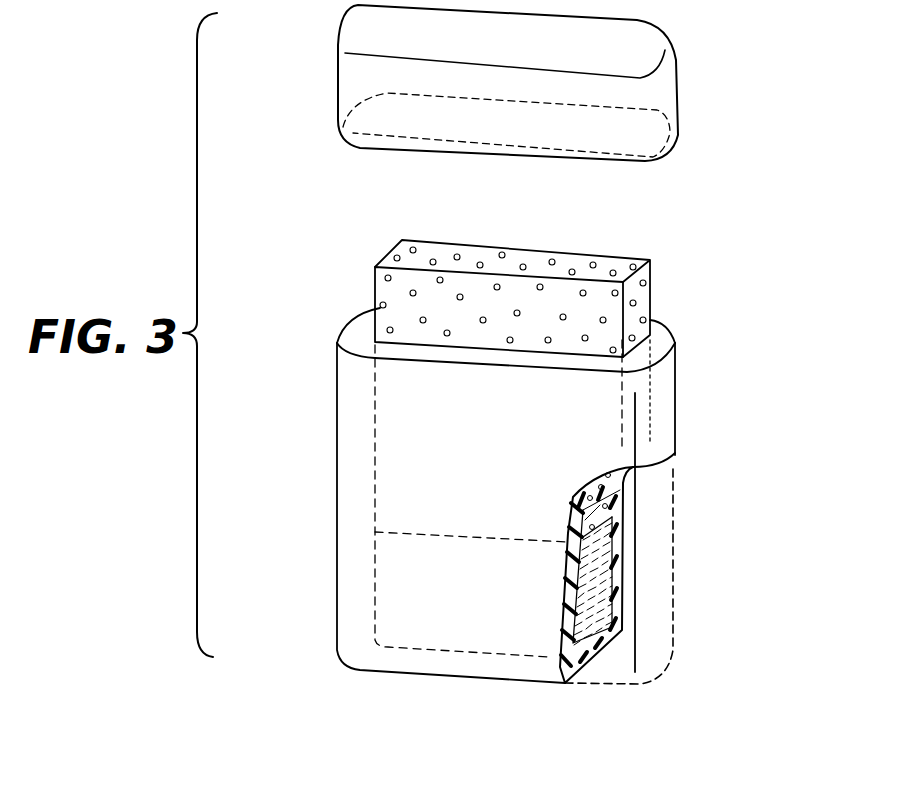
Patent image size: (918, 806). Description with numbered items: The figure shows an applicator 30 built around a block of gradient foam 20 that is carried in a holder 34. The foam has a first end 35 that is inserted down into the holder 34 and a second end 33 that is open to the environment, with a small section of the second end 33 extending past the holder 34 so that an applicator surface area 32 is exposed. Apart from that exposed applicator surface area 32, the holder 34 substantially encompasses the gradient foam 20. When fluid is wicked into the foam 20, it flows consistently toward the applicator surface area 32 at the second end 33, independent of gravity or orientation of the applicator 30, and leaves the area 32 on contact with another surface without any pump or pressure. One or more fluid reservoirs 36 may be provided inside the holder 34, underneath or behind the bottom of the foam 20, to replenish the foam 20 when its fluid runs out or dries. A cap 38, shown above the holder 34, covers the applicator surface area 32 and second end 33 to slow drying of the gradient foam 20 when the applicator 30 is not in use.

The gradient foam 20 is at (393, 292).
The applicator 30 is at (748, 225).
The applicator surface area 32 is at (457, 272).
The second end 33 is at (450, 232).
The holder 34 is at (668, 418).
The first end 35 is at (367, 497).
The fluid reservoir 36 is at (433, 592).
The cap 38 is at (667, 97).